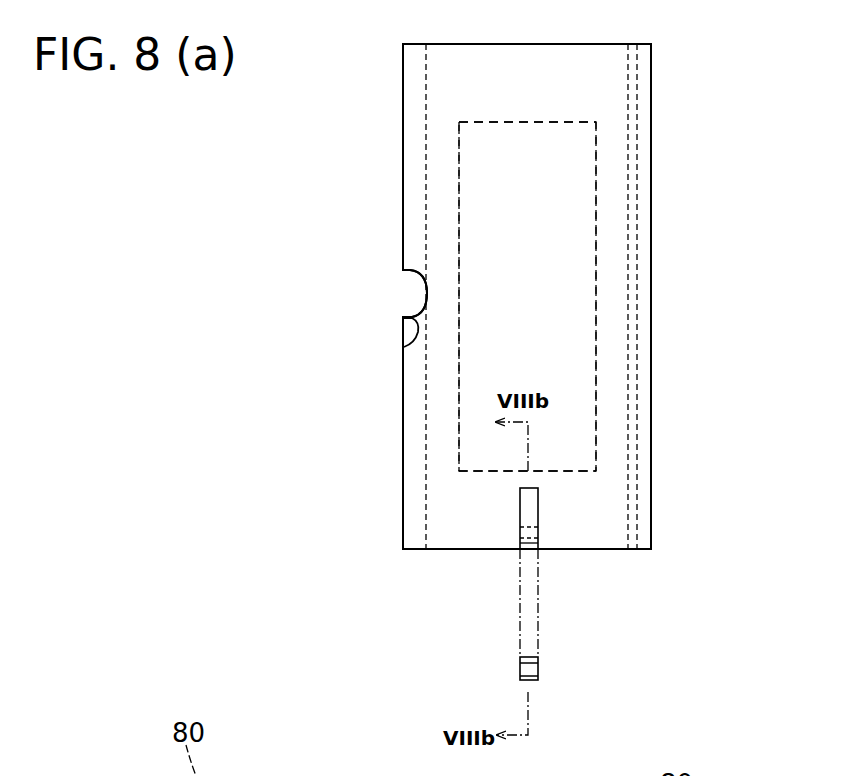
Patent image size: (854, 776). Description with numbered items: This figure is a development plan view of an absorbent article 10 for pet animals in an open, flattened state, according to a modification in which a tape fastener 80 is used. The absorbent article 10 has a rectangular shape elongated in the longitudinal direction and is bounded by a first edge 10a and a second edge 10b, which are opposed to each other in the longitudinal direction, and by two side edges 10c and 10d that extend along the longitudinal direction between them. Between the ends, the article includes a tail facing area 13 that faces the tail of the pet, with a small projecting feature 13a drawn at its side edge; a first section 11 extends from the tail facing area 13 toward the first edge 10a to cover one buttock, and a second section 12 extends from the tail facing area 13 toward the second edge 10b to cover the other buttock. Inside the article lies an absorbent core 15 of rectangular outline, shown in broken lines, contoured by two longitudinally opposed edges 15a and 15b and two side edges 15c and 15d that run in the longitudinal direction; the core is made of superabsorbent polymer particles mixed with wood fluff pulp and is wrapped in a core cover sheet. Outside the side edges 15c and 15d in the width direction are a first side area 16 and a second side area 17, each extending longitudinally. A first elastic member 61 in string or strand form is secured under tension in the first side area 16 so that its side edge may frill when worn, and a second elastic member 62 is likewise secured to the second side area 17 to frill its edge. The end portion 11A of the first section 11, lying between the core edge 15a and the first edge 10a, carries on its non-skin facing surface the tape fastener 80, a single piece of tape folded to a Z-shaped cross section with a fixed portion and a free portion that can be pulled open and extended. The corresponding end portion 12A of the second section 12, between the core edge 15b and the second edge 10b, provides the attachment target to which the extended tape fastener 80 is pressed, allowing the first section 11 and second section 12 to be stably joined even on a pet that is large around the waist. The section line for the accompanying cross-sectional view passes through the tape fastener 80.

The absorbent article 10 is at (388, 86).
The first edge 10a is at (590, 549).
The second edge 10b is at (580, 44).
The side edge 10c is at (651, 365).
The side edge 10d is at (403, 408).
The first section 11 is at (583, 410).
The end portion of the first section 11A is at (497, 530).
The second section 12 is at (585, 90).
The end portion of the second section 12A is at (490, 62).
The tail facing area 13 is at (407, 343).
The projection 13a is at (415, 312).
The absorbent core 15 is at (535, 310).
The edge of the absorbent core 15a is at (568, 472).
The edge of the absorbent core 15b is at (525, 120).
The side edge of the absorbent core 15c is at (596, 227).
The side edge of the absorbent core 15d is at (459, 230).
The first side area 16 is at (617, 444).
The second side area 17 is at (414, 447).
The first elastic member 61 is at (637, 268).
The second elastic member 62 is at (426, 200).
The tape fastener 80 is at (542, 518).